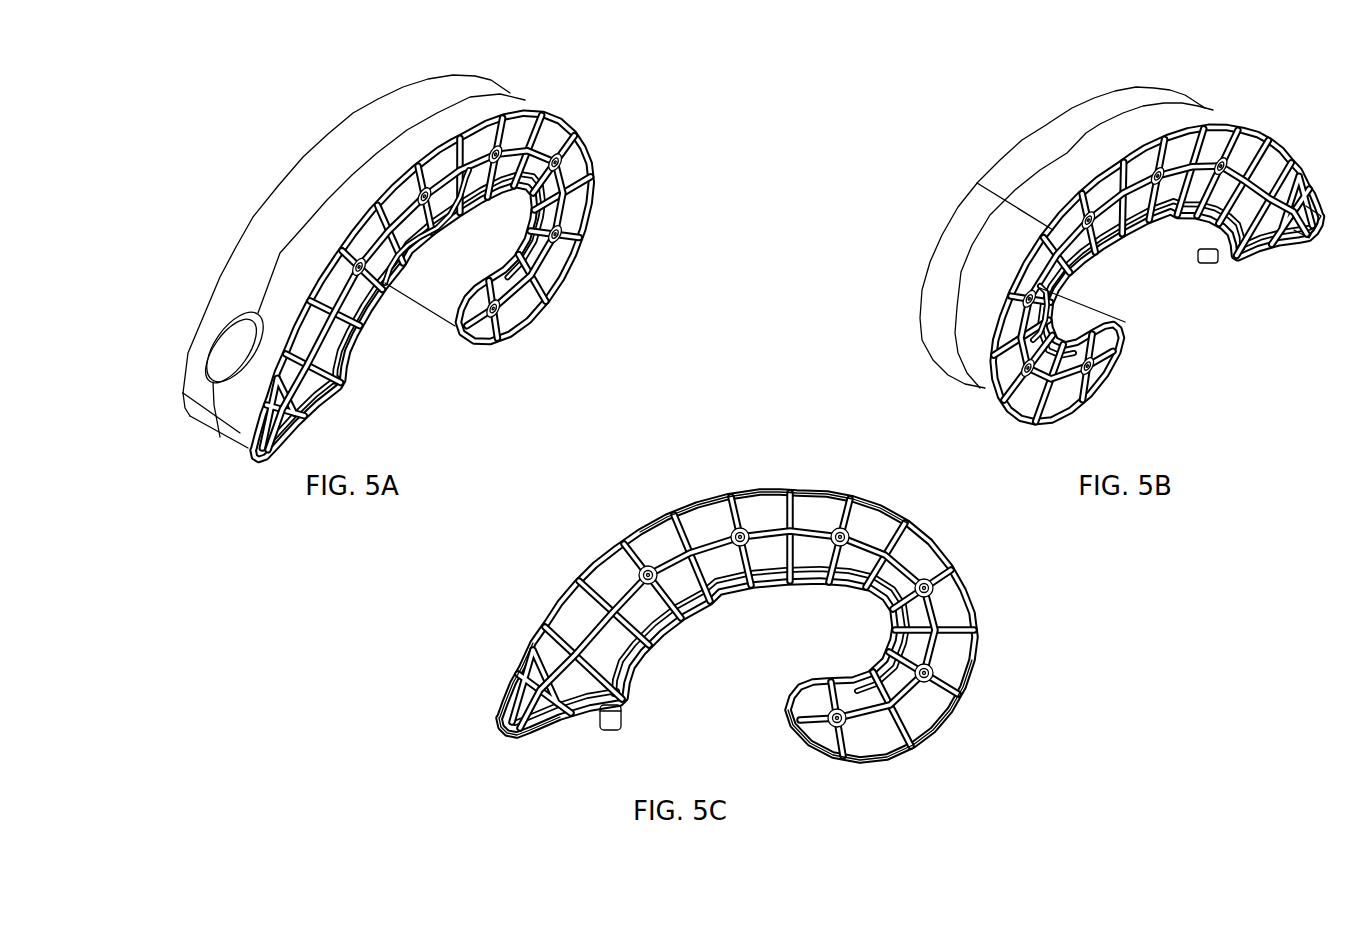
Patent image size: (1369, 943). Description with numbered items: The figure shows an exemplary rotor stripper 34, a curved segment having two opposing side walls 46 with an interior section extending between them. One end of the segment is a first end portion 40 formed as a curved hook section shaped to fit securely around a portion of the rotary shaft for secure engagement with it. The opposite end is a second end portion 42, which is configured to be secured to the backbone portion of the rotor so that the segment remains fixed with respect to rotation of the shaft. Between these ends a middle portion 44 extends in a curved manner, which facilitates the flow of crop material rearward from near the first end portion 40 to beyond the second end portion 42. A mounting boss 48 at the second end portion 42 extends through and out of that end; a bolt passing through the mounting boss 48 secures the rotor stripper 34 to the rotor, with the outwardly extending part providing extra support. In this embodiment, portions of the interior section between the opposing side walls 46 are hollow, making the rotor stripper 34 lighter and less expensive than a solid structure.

In FIG. 5C, the rotor stripper 34 is at (737, 607).
In FIG. 5A, the rotor stripper 34 is at (392, 273).
In FIG. 5B, the rotor stripper 34 is at (1102, 247).
In FIG. 5C, the first end portion 40 is at (906, 710).
In FIG. 5A, the first end portion 40 is at (512, 248).
In FIG. 5B, the first end portion 40 is at (1018, 353).
In FIG. 5C, the second end portion 42 is at (493, 689).
In FIG. 5A, the second end portion 42 is at (215, 446).
In FIG. 5B, the second end portion 42 is at (1312, 174).
In FIG. 5C, the middle portion 44 is at (773, 476).
In FIG. 5A, the middle portion 44 is at (354, 254).
In FIG. 5B, the middle portion 44 is at (1066, 232).
In FIG. 5C, the opposing side walls 46 is at (743, 610).
In FIG. 5A, the opposing side walls 46 is at (426, 269).
In FIG. 5B, the opposing side walls 46 is at (1154, 248).
In FIG. 5C, the mounting boss 48 is at (594, 750).
In FIG. 5A, the mounting boss 48 is at (218, 324).
In FIG. 5B, the mounting boss 48 is at (1217, 291).